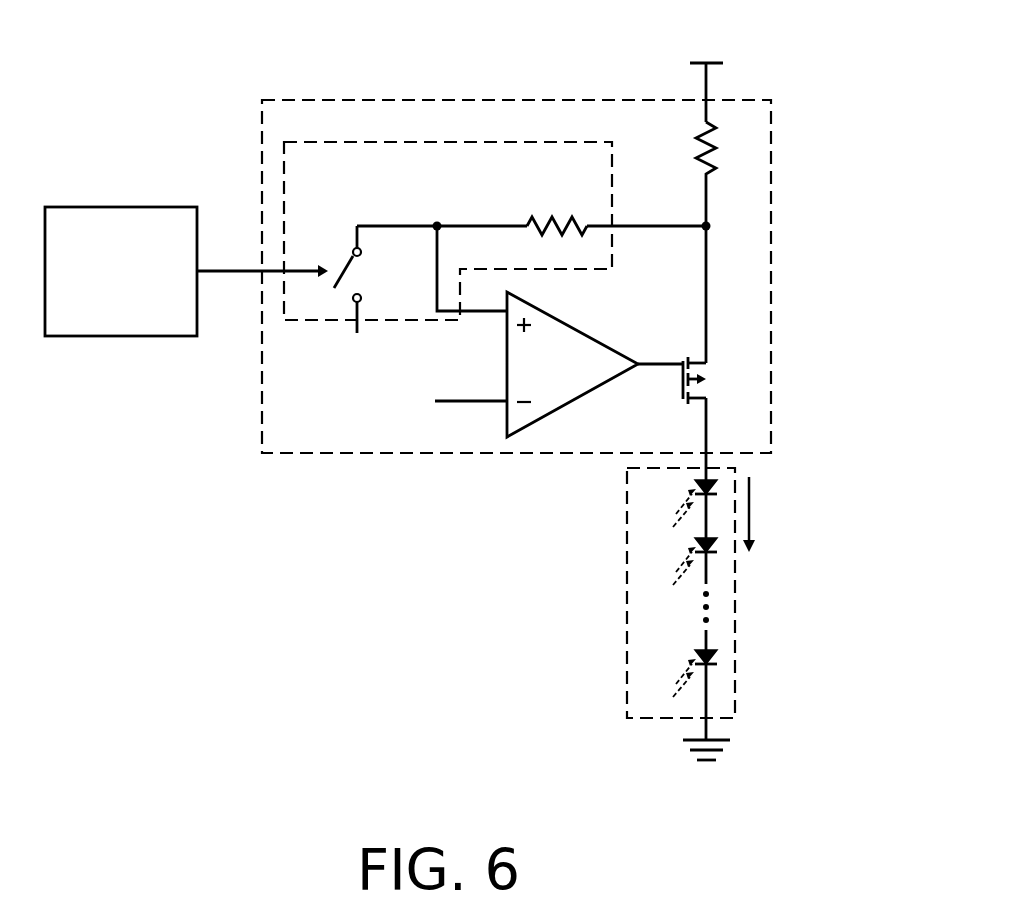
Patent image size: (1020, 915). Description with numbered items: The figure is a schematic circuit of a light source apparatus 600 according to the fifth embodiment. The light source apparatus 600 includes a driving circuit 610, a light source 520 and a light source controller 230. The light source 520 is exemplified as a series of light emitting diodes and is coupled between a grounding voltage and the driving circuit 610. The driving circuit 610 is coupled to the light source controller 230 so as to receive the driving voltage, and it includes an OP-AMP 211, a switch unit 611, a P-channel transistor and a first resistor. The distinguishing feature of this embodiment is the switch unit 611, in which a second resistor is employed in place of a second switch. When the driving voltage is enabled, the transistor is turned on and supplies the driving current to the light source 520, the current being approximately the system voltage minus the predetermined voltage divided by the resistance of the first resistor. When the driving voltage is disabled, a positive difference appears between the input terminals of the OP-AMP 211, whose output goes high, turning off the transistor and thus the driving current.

The light source apparatus 600 is at (852, 812).
The light source controller 230 is at (138, 336).
The driving circuit 610 is at (771, 228).
The switch unit 611 is at (411, 142).
The OP-AMP 211 is at (585, 332).
The light source 520 is at (735, 613).